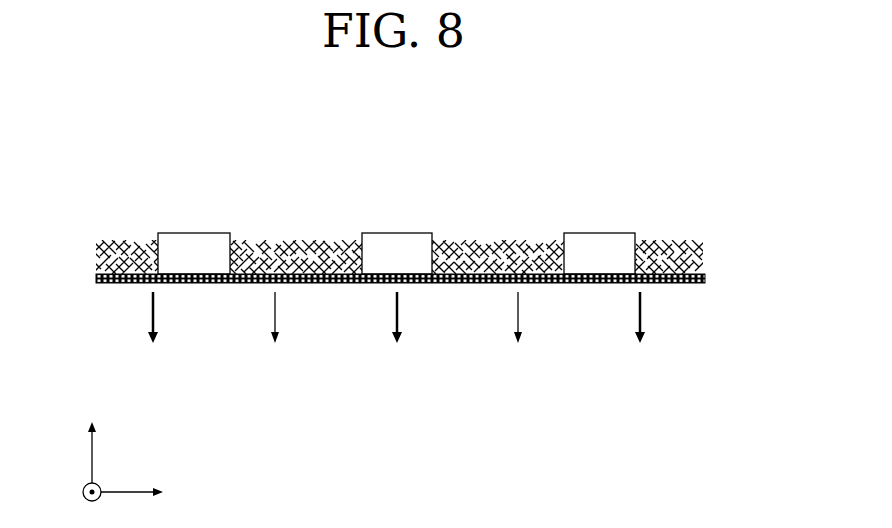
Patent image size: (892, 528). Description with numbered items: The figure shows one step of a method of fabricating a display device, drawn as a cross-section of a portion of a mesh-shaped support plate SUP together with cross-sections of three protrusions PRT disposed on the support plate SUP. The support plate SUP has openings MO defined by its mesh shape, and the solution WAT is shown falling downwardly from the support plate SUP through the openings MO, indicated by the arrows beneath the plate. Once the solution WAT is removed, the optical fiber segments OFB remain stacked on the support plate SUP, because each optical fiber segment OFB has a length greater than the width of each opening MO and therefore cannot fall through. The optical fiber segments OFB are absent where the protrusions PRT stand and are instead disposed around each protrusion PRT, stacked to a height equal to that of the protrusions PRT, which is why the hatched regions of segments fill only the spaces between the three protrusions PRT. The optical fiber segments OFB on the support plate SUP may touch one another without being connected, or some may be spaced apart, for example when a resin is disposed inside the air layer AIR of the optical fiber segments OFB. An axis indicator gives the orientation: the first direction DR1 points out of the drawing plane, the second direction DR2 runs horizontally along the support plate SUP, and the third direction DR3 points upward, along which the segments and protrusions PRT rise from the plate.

The protrusion PRT is at (397, 248).
The air layer AIR is at (660, 258).
The optical fiber segment OFB is at (700, 250).
The support plate SUP is at (705, 280).
The solution WAT is at (396, 334).
The opening MO is at (550, 290).
The first direction DR1 is at (92, 505).
The second direction DR2 is at (154, 493).
The third direction DR3 is at (92, 438).